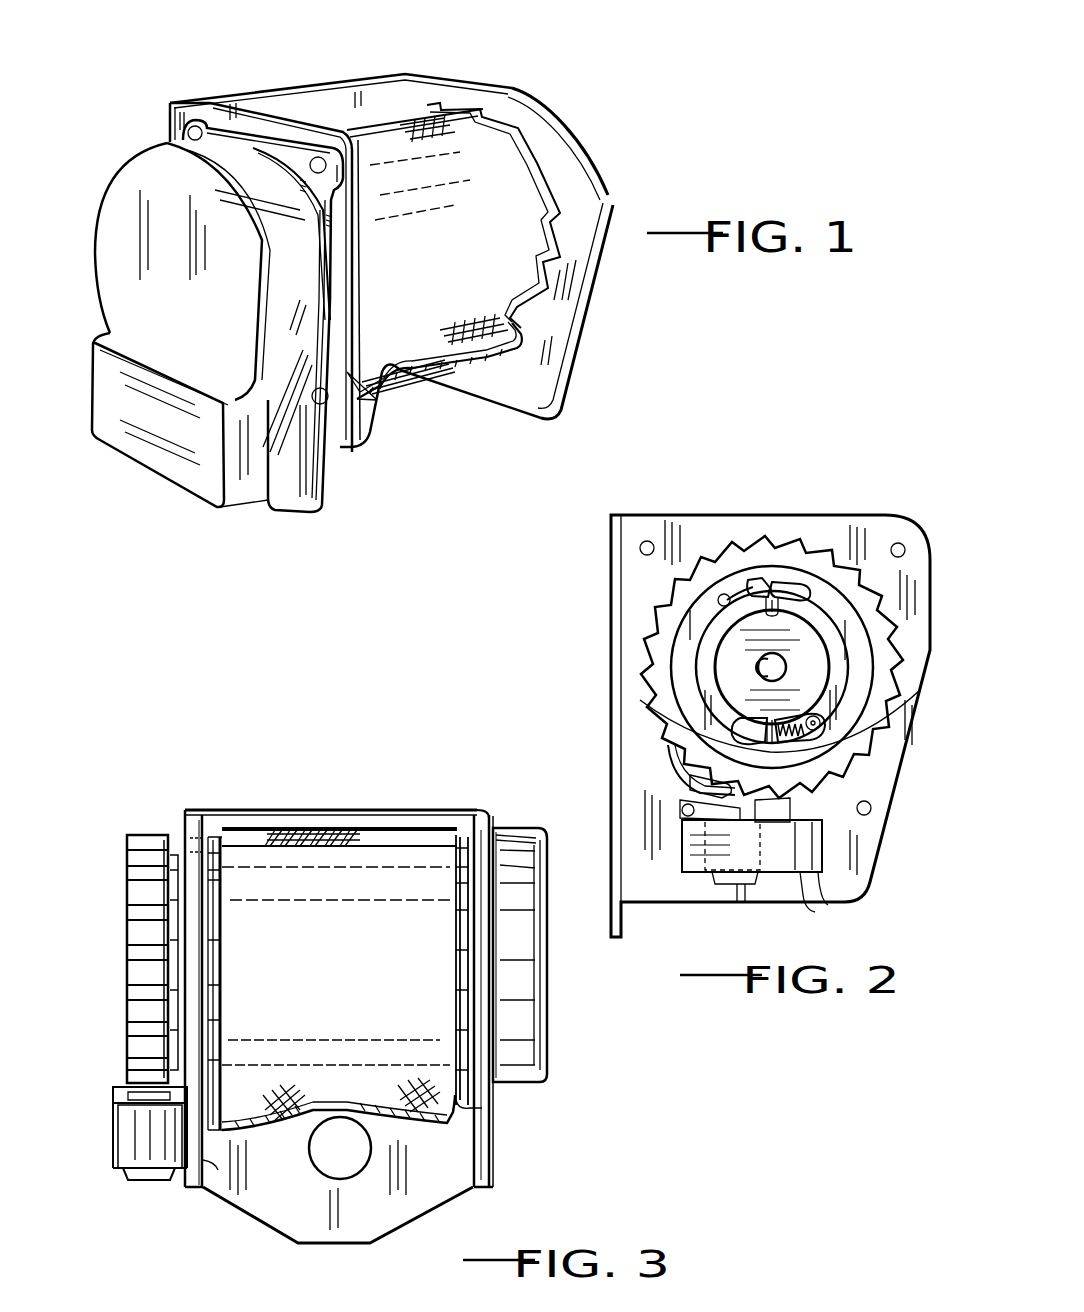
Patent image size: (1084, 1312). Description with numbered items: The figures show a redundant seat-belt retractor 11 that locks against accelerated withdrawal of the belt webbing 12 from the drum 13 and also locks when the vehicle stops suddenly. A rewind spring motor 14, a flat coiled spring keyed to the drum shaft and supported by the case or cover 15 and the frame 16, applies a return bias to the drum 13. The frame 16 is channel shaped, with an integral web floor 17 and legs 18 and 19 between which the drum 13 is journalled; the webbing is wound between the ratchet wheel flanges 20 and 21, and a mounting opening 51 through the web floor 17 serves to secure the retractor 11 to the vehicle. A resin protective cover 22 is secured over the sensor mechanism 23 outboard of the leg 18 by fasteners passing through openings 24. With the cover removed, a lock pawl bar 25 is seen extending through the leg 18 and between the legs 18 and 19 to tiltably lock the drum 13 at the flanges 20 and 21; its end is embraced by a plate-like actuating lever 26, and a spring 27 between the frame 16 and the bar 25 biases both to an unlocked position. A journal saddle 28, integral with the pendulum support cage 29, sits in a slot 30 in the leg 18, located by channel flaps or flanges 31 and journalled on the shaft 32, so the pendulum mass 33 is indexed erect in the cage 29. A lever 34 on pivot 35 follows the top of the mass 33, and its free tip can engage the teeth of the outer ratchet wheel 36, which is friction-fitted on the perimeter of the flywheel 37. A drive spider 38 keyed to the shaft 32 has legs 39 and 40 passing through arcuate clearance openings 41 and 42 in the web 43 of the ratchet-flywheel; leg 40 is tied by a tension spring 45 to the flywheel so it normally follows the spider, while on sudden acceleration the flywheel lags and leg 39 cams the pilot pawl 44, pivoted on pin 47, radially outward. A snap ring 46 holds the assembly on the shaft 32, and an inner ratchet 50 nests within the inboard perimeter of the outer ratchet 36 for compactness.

In FIG. 1, the retractor 11 is at (610, 367).
In FIG. 2, the retractor 11 is at (896, 492).
In FIG. 3, the retractor 11 is at (591, 1161).
In FIG. 1, the belt webbing 12 is at (400, 385).
In FIG. 3, the belt webbing 12 is at (310, 1110).
In FIG. 1, the drum 13 is at (389, 95).
In FIG. 3, the drum 13 is at (404, 862).
In FIG. 1, the rewind spring motor 14 is at (612, 157).
In FIG. 3, the rewind spring motor 14 is at (556, 1090).
In FIG. 1, the case or cover 15 is at (556, 122).
In FIG. 3, the case or cover 15 is at (548, 975).
In FIG. 1, the frame 16 is at (528, 408).
In FIG. 2, the frame 16 is at (612, 545).
In FIG. 3, the frame 16 is at (412, 1210).
In FIG. 1, the web floor 17 is at (298, 100).
In FIG. 2, the web floor 17 is at (612, 668).
In FIG. 3, the web floor 17 is at (366, 815).
In FIG. 1, the leg 18 is at (290, 518).
In FIG. 2, the leg 18 is at (870, 897).
In FIG. 3, the leg 18 is at (196, 1190).
In FIG. 1, the leg 19 is at (582, 334).
In FIG. 3, the leg 19 is at (489, 1165).
In FIG. 1, the ratchet wheel flange 20 is at (350, 240).
In FIG. 3, the ratchet wheel flange 20 is at (218, 994).
In FIG. 1, the ratchet wheel flange 21 is at (570, 262).
In FIG. 3, the ratchet wheel flange 21 is at (460, 990).
In FIG. 1, the protective cover 22 is at (175, 470).
In FIG. 1, the sensor mechanism 23 is at (120, 190).
In FIG. 2, the sensor mechanism 23 is at (622, 738).
In FIG. 3, the sensor mechanism 23 is at (119, 812).
In FIG. 2, the openings 24 is at (647, 540).
In FIG. 3, the openings 24 is at (215, 830).
In FIG. 2, the lock pawl bar 25 is at (682, 810).
In FIG. 3, the lock pawl bar 25 is at (460, 1110).
In FIG. 2, the actuating lever 26 is at (688, 786).
In FIG. 2, the spring 27 is at (676, 770).
In FIG. 2, the journal saddle 28 is at (830, 832).
In FIG. 3, the journal saddle 28 is at (215, 975).
In FIG. 2, the pendulum support cage 29 is at (722, 882).
In FIG. 3, the pendulum support cage 29 is at (130, 1168).
In FIG. 2, the slot 30 is at (766, 900).
In FIG. 2, the channel flaps or flanges 31 is at (808, 900).
In FIG. 3, the channel flaps or flanges 31 is at (212, 1162).
In FIG. 2, the shaft 32 is at (760, 672).
In FIG. 2, the pendulum mass 33 is at (690, 875).
In FIG. 3, the pendulum mass 33 is at (145, 1110).
In FIG. 2, the lever 34 is at (790, 812).
In FIG. 3, the lever 34 is at (124, 1092).
In FIG. 2, the pivot 35 is at (680, 838).
In FIG. 3, the pivot 35 is at (112, 1096).
In FIG. 2, the outer ratchet wheel 36 is at (893, 683).
In FIG. 3, the outer ratchet wheel 36 is at (138, 940).
In FIG. 2, the flywheel 37 is at (860, 652).
In FIG. 2, the drive spider 38 is at (810, 643).
In FIG. 2, the leg 39 is at (778, 590).
In FIG. 2, the leg 40 is at (835, 748).
In FIG. 2, the arcuate clearance opening 41 is at (738, 585).
In FIG. 2, the arcuate clearance opening 42 is at (740, 725).
In FIG. 2, the web 43 is at (703, 630).
In FIG. 2, the pilot pawl 44 is at (790, 590).
In FIG. 2, the tension spring 45 is at (795, 720).
In FIG. 2, the snap ring 46 is at (758, 662).
In FIG. 2, the pin 47 is at (716, 600).
In FIG. 3, the inner ratchet 50 is at (176, 855).
In FIG. 3, the mounting opening 51 is at (355, 1165).